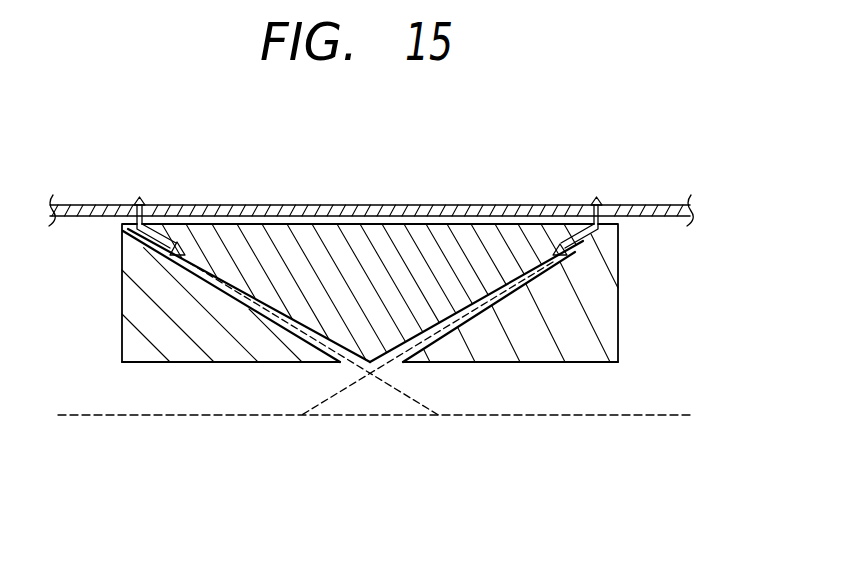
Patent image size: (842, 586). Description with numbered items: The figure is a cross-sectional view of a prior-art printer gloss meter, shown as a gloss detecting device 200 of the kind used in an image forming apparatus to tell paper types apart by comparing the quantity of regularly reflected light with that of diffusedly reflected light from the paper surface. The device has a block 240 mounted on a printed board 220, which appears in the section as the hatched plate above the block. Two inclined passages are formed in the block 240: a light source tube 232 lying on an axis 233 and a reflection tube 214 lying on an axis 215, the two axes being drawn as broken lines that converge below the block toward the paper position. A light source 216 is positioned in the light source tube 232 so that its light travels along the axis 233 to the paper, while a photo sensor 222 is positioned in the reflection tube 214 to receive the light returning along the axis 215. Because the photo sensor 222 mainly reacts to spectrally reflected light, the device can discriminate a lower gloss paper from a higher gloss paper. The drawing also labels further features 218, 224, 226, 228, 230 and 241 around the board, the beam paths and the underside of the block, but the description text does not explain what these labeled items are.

The gloss detecting device 200 is at (139, 148).
The reflection tube 214 is at (476, 312).
The axis 215 is at (468, 320).
The light source 216 is at (246, 312).
The first mirror mounting pin 218 is at (137, 197).
The printed board 220 is at (368, 204).
The photo sensor 222 is at (558, 244).
The second mirror mounting pin 224 is at (599, 197).
The first optical path 226 is at (347, 385).
The second optical path 228 is at (395, 385).
The reference plane 230 is at (670, 413).
The light source tube 232 is at (262, 300).
The axis 233 is at (268, 318).
The block 240 is at (334, 315).
The bottom surface of support block 241 is at (151, 363).